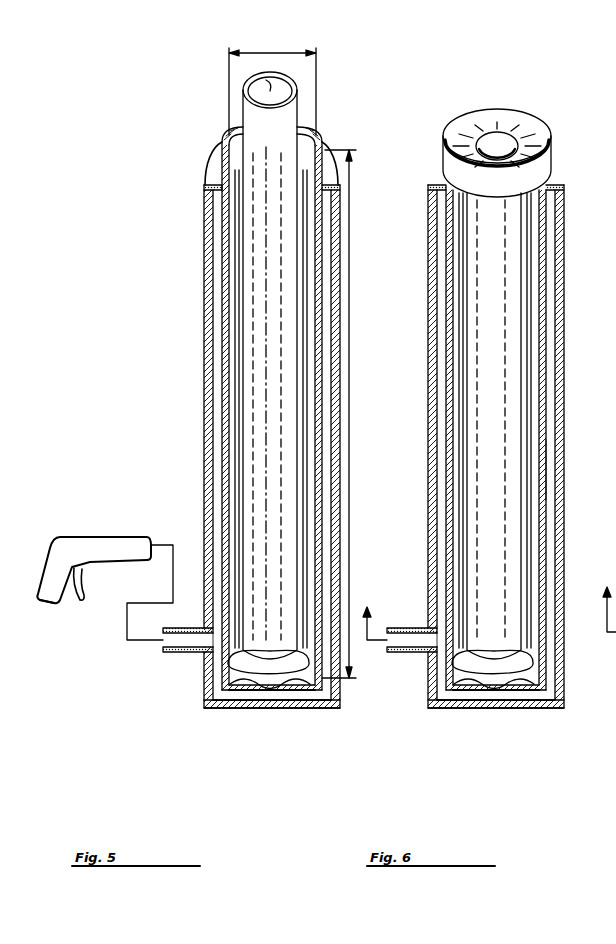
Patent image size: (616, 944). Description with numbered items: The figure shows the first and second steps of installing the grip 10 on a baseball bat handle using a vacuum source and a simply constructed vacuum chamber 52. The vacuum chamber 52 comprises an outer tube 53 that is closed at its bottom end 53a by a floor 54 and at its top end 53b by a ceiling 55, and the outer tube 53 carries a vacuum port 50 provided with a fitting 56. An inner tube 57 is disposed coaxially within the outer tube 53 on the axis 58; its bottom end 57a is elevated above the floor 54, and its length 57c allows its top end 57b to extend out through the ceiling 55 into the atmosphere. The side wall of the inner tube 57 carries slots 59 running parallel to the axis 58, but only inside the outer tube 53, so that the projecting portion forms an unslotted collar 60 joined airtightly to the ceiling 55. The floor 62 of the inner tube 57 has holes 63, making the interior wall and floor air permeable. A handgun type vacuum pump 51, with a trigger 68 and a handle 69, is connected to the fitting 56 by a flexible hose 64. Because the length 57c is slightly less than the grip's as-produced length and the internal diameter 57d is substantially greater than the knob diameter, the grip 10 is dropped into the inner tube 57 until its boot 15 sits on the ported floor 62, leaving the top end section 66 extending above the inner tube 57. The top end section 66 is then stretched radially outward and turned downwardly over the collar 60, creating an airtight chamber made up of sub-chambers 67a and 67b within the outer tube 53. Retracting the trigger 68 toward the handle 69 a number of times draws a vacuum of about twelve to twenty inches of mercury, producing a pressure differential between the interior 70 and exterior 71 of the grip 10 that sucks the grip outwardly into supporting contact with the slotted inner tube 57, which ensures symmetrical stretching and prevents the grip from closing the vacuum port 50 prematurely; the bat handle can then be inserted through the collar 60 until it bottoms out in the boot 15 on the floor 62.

In FIG. 5, the grip 10 is at (297, 128).
In FIG. 6, the grip 10 is at (518, 311).
In FIG. 5, the boot 15 is at (237, 662).
In FIG. 6, the boot 15 is at (470, 660).
In FIG. 5, the vacuum port 50 is at (200, 642).
In FIG. 6, the vacuum port 50 is at (433, 640).
In FIG. 5, the vacuum pump 51 is at (109, 500).
In FIG. 5, the vacuum chamber 52 is at (272, 727).
In FIG. 6, the vacuum chamber 52 is at (496, 727).
In FIG. 5, the outer tube 53 is at (204, 364).
In FIG. 6, the outer tube 53 is at (564, 391).
In FIG. 5, the bottom end 53a is at (202, 703).
In FIG. 6, the bottom end 53a is at (564, 698).
In FIG. 5, the top end 53b is at (204, 200).
In FIG. 6, the top end 53b is at (564, 187).
In FIG. 5, the floor 54 is at (288, 703).
In FIG. 6, the floor 54 is at (463, 703).
In FIG. 5, the ceiling 55 is at (216, 171).
In FIG. 6, the ceiling 55 is at (428, 184).
In FIG. 5, the fitting 56 is at (185, 628).
In FIG. 6, the fitting 56 is at (402, 652).
In FIG. 5, the inner tube 57 is at (222, 382).
In FIG. 6, the inner tube 57 is at (546, 412).
In FIG. 5, the bottom end 57a is at (327, 705).
In FIG. 6, the bottom end 57a is at (540, 683).
In FIG. 5, the top end 57b is at (224, 145).
In FIG. 6, the top end 57b is at (563, 152).
In FIG. 5, the length 57c is at (349, 331).
In FIG. 5, the internal diameter 57d is at (254, 55).
In FIG. 5, the axis 58 is at (266, 318).
In FIG. 5, the slots 59 is at (252, 246).
In FIG. 6, the slots 59 is at (512, 350).
In FIG. 5, the collar 60 is at (320, 142).
In FIG. 5, the floor 62 is at (267, 687).
In FIG. 6, the floor 62 is at (527, 683).
In FIG. 5, the holes 63 is at (248, 690).
In FIG. 6, the holes 63 is at (467, 687).
In FIG. 5, the flexible hose 64 is at (127, 628).
In FIG. 6, the flexible hose 64 is at (370, 615).
In FIG. 5, the top end section 66 is at (281, 128).
In FIG. 6, the top end section 66 is at (462, 160).
In FIG. 6, the sub-chamber 67a is at (552, 470).
In FIG. 6, the sub-chamber 67b is at (540, 457).
In FIG. 5, the trigger 68 is at (88, 580).
In FIG. 5, the handle 69 is at (52, 586).
In FIG. 5, the interior 70 is at (265, 80).
In FIG. 6, the interior 70 is at (498, 150).
In FIG. 5, the exterior 71 is at (237, 157).
In FIG. 6, the exterior 71 is at (552, 260).